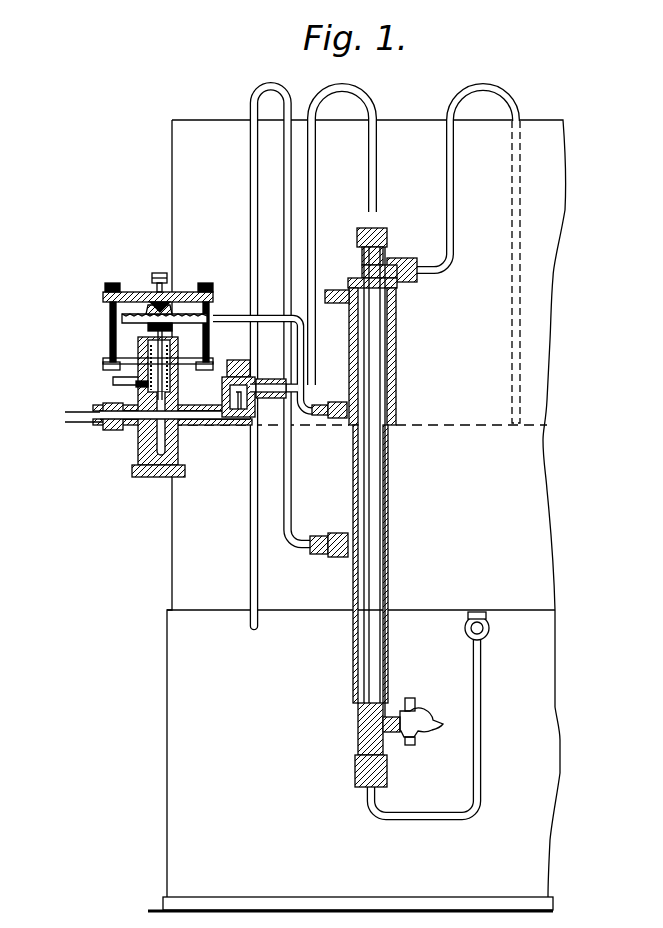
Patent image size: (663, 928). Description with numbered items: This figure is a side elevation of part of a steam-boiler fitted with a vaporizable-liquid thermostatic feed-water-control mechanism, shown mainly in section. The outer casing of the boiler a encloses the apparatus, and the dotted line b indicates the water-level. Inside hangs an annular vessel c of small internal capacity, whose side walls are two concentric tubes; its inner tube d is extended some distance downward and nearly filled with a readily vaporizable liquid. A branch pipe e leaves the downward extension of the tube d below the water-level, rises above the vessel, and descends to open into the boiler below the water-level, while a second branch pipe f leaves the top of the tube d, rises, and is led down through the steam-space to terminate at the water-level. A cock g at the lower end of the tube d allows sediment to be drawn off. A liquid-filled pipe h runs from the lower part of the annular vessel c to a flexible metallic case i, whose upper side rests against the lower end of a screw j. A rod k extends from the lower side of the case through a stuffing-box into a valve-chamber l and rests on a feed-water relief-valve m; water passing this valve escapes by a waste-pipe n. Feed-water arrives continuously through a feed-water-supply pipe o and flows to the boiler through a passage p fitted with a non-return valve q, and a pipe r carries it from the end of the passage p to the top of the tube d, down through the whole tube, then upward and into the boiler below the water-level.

The outer casing of the boiler a is at (170, 148).
The water-level line b is at (527, 423).
The annular vessel c is at (396, 352).
The inner tube d is at (388, 478).
The branch pipe e is at (254, 160).
The branch pipe f is at (452, 192).
The cock g is at (414, 745).
The pipe h is at (224, 315).
The flexible metallic case i is at (130, 327).
The screw j is at (155, 278).
The rod k is at (153, 333).
The valve-chamber l is at (198, 385).
The feed-water relief-valve m is at (140, 386).
The waste-pipe n is at (113, 378).
The feed-water-supply pipe o is at (93, 418).
The passage p is at (212, 427).
The non-return valve q is at (250, 420).
The pipe r is at (377, 160).